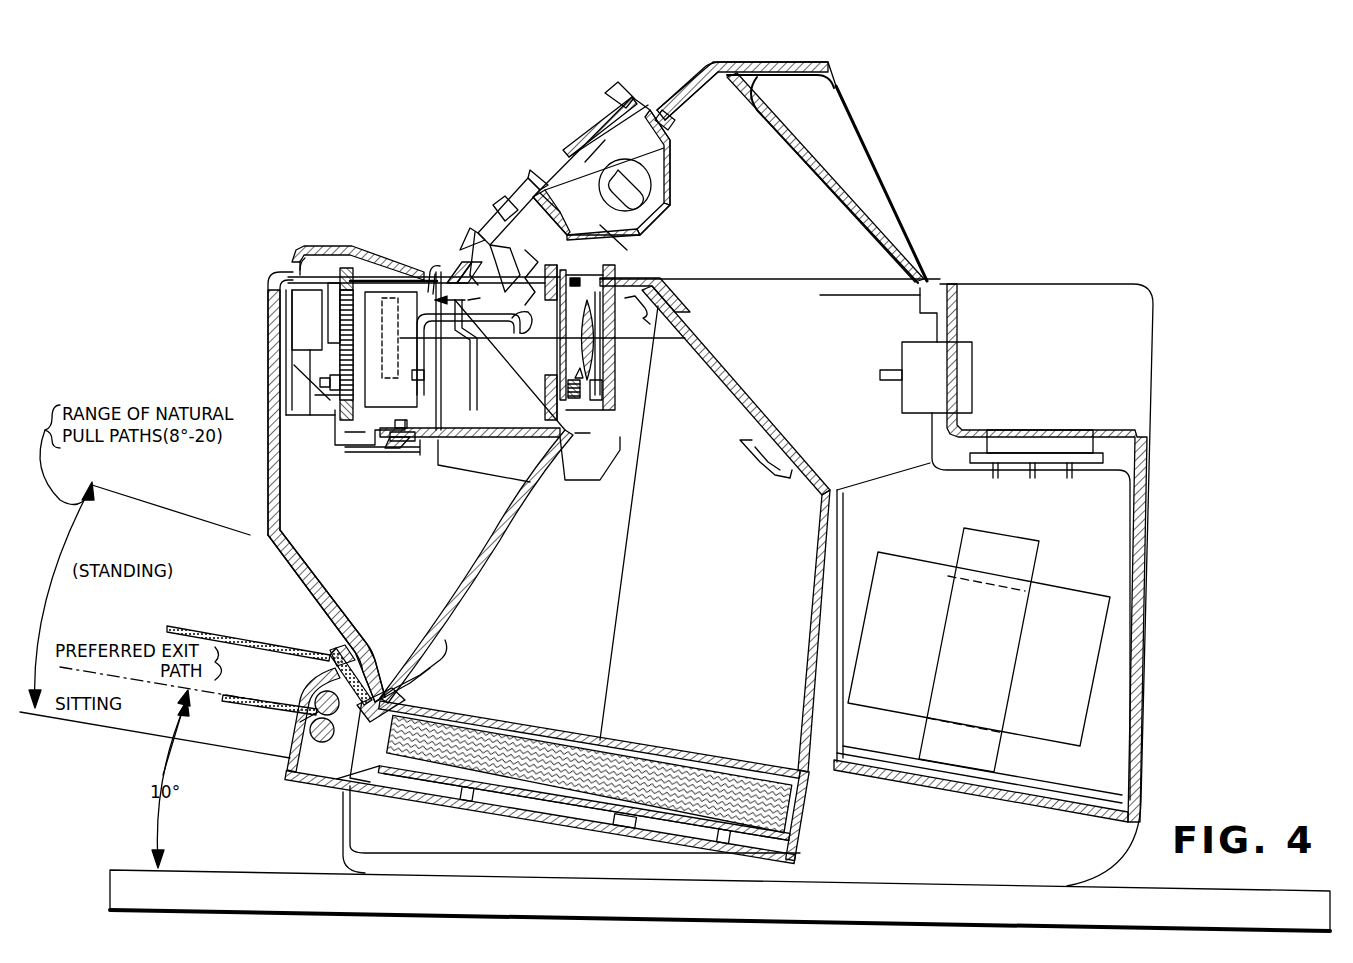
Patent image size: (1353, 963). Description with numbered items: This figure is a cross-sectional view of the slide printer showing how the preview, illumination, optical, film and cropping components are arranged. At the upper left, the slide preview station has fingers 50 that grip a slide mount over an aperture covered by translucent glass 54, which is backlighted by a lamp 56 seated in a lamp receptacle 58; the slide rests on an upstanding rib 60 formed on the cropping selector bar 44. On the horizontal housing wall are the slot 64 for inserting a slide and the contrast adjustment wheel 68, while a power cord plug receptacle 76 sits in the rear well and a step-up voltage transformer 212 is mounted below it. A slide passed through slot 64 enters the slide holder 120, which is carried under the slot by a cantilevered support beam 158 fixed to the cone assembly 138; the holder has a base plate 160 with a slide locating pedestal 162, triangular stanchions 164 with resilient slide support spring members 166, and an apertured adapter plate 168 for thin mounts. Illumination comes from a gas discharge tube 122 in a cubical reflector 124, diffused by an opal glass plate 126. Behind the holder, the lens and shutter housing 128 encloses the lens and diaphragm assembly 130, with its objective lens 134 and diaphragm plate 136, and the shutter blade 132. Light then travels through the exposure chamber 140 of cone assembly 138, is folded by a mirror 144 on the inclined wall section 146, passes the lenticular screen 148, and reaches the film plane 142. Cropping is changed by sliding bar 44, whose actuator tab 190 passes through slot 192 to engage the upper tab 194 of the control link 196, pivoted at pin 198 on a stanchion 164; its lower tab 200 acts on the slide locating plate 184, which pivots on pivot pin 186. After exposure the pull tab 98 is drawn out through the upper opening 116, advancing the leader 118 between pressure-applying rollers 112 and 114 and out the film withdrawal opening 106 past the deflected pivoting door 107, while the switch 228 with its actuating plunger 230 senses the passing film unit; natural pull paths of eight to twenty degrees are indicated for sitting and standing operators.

The cropping selector bar 44 is at (483, 228).
The laterally spaced fingers 50 is at (617, 83).
The translucent glass 54 is at (600, 150).
The lamp 56 is at (630, 172).
The lamp receptacle 58 is at (696, 163).
The upstanding rib 60 is at (504, 200).
The slot 64 is at (452, 278).
The contrast adjustment wheel 68 is at (345, 265).
The AC power cord plug receptacle 76 is at (955, 372).
The pull tab 98 is at (238, 625).
The film withdrawal opening 106 is at (290, 722).
The pivoting door 107 is at (315, 700).
The pressure-applying roller 112 is at (325, 692).
The pressure-applying roller 114 is at (330, 735).
The upper opening 116 is at (335, 655).
The leader 118 is at (252, 710).
The slide holder 120 is at (468, 299).
The gas discharge tube 122 is at (390, 295).
The reflector 124 is at (360, 262).
The opal glass plate 126 is at (430, 270).
The lens and shutter housing 128 is at (640, 282).
The lens and diaphragm assembly 130 is at (632, 258).
The shutter blade 132 is at (565, 278).
The objective lens 134 is at (600, 352).
The diaphragm plate 136 is at (582, 398).
The cone assembly 138 is at (470, 570).
The exposure chamber 140 is at (548, 545).
The film plane 142 is at (498, 718).
The mirror 144 is at (712, 368).
The inclined wall section 146 is at (745, 396).
The lenticular screen 148 is at (665, 745).
The cantilevered support beam 158 is at (455, 470).
The base plate 160 is at (497, 428).
The slide locating pedestal 162 is at (425, 447).
The stanchion 164 is at (513, 360).
The slide support spring member 166 is at (478, 352).
The adapter plate 168 is at (440, 270).
The slide locating plate 184 is at (405, 430).
The pivot pin 186 is at (390, 440).
The actuator tab 190 is at (535, 262).
The slot 192 is at (575, 222).
The upper tab 194 is at (515, 330).
The control link 196 is at (430, 318).
The pin 198 is at (424, 375).
The tab 200 is at (345, 437).
The step-up voltage transformer 212 is at (1062, 745).
The switch 228 is at (403, 696).
The actuating plunger 230 is at (362, 758).